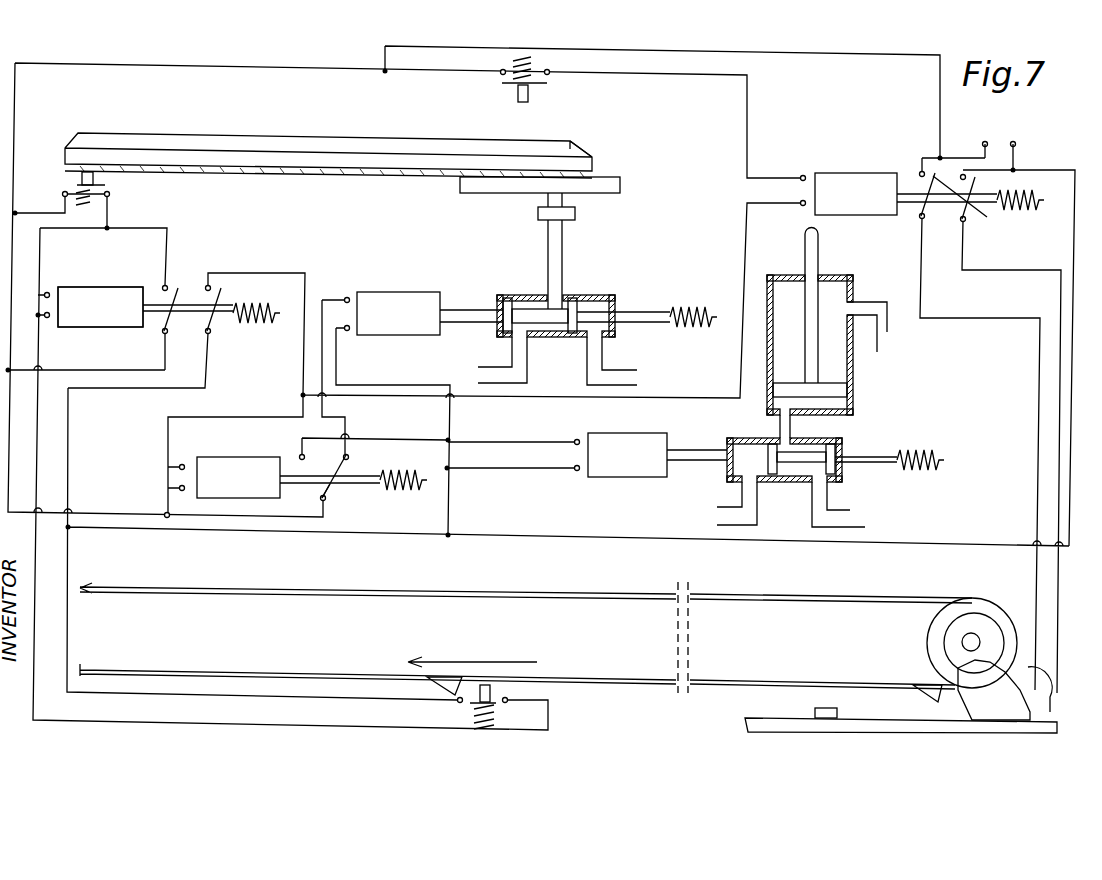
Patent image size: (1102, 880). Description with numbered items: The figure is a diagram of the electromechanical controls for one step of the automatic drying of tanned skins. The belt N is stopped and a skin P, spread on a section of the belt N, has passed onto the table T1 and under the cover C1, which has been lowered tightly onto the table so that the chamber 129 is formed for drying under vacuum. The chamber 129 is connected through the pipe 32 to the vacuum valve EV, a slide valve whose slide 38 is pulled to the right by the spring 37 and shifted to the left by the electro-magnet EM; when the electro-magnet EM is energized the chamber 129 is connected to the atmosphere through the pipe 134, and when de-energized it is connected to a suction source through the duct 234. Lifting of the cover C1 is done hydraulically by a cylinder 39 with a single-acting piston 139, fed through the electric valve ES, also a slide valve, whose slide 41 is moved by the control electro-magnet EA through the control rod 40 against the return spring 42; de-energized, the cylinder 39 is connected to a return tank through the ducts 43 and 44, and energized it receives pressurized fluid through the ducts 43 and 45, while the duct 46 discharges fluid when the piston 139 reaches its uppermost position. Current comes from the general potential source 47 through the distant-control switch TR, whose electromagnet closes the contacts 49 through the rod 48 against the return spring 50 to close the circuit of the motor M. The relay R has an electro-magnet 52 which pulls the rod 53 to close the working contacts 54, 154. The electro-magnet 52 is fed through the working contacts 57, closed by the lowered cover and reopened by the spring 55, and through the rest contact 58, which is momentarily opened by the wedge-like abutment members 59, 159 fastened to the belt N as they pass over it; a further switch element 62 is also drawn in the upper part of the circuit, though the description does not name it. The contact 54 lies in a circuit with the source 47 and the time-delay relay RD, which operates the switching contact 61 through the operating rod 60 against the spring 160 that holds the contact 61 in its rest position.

The chamber 129 is at (198, 160).
The working contacts 57 is at (76, 184).
The spring 55 is at (109, 194).
The switch 62 is at (535, 88).
The cover C1 is at (577, 150).
The table T1 is at (621, 186).
The pipe 32 is at (565, 198).
The distant-control switch TR is at (843, 173).
The rod 48 is at (912, 188).
The general potential source 47 is at (1014, 142).
The contacts 49 is at (978, 198).
The return spring 50 is at (1015, 210).
The relay R is at (96, 280).
The electro-magnet 52 is at (100, 327).
The rod 53 is at (190, 304).
The working contact 54 is at (170, 318).
The working contact 154 is at (216, 318).
The electro-magnet EM is at (392, 292).
The vacuum valve EV is at (526, 294).
The spring 37 is at (690, 305).
The pipe 134 is at (491, 370).
The slide 38 is at (550, 322).
The duct 234 is at (626, 381).
The duct 46 is at (887, 335).
The single-acting piston 139 is at (845, 376).
The cylinder 39 is at (860, 416).
The duct 43 is at (780, 423).
The electric valve ES is at (851, 447).
The slide 41 is at (790, 463).
The return spring 42 is at (928, 451).
The duct 45 is at (717, 516).
The duct 44 is at (851, 516).
The control electro-magnet EA is at (622, 470).
The control rod 40 is at (685, 450).
The time-delay relay RD is at (233, 468).
The operating rod 60 is at (361, 478).
The switching relay contact 61 is at (332, 488).
The spring 160 is at (413, 467).
The skin P is at (255, 587).
The belt N is at (557, 594).
The motor M is at (1022, 668).
The wedge-like abutment member 59 is at (926, 684).
The wedge-like abutment member 159 is at (448, 680).
The rest contact 58 is at (506, 698).